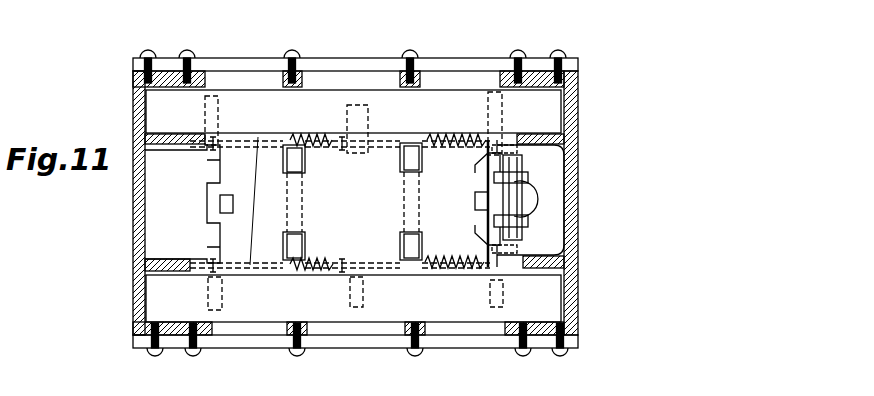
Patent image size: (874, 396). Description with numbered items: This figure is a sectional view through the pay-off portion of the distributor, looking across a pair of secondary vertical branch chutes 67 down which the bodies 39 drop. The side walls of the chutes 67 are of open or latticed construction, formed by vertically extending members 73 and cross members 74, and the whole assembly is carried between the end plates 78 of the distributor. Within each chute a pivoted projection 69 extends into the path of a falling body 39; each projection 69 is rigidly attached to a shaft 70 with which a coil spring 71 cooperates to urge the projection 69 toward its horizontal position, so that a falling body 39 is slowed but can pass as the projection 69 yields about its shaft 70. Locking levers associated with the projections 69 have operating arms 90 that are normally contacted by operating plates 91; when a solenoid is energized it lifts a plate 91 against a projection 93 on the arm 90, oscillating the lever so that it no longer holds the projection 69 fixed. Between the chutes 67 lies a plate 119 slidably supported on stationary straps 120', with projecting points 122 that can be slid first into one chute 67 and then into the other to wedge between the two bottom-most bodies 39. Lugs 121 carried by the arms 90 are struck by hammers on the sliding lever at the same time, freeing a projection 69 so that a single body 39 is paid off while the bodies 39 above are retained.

The body 39 is at (353, 206).
The secondary vertical branch chute 67 is at (533, 70).
The pivoted projection 69 is at (338, 137).
The shaft 70 is at (389, 144).
The coil spring 71 is at (337, 152).
The vertically extending member 73 is at (405, 72).
The cross member 74 is at (463, 63).
The end plate 78 is at (131, 228).
The operating arm 90 is at (494, 178).
The operating plate 91 is at (517, 193).
The projection 93 is at (527, 174).
The plate 119 is at (233, 228).
The stationary strap 120' is at (396, 214).
The lug 121 is at (476, 166).
The projecting point 122 is at (248, 204).